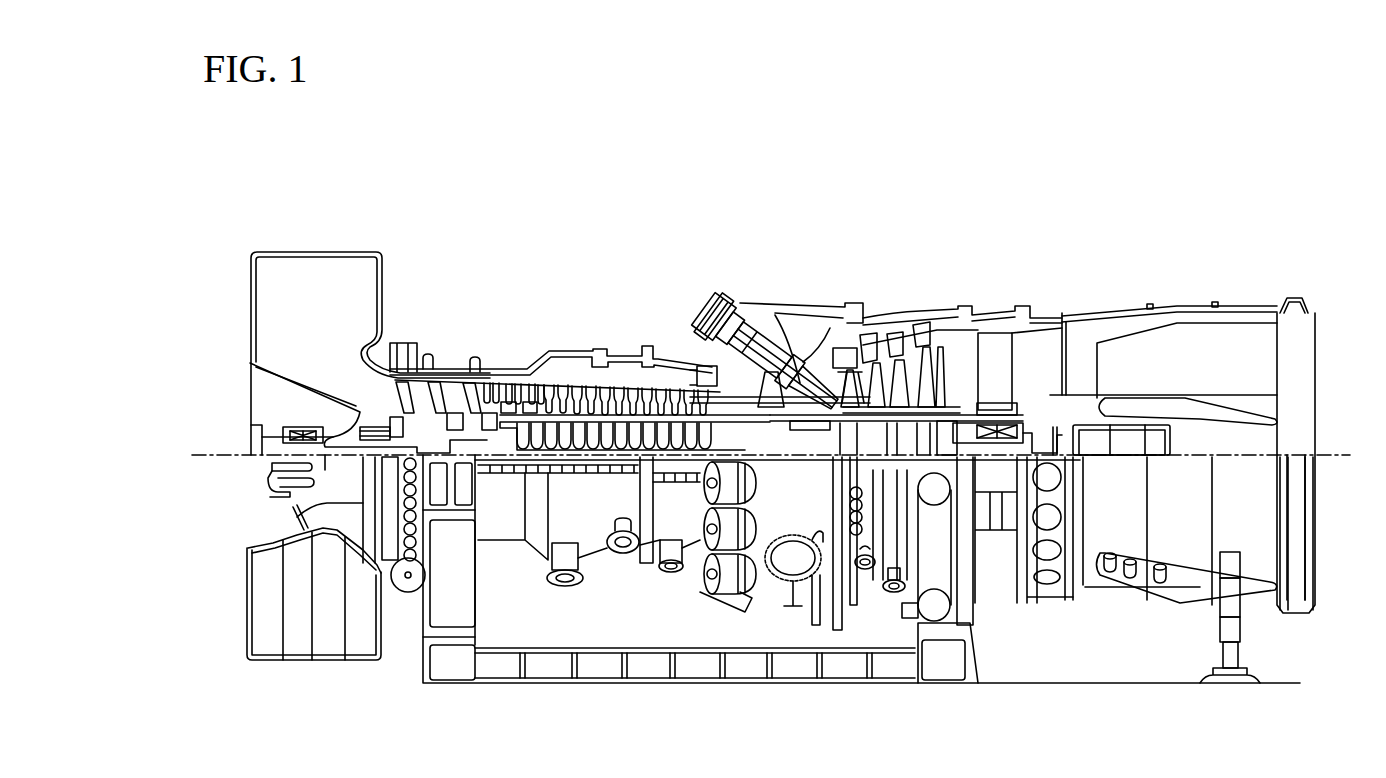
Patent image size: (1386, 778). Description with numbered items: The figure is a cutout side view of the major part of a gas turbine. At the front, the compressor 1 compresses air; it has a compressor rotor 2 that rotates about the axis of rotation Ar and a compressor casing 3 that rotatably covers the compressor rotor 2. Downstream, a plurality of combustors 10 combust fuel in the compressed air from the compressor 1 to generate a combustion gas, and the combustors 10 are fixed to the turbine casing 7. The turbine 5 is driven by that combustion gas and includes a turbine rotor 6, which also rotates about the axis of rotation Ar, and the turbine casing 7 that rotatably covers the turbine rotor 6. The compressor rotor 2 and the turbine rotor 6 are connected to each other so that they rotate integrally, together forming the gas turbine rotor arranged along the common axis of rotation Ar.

The compressor 1 is at (781, 467).
The compressor rotor 2 is at (471, 432).
The compressor casing 3 is at (577, 352).
The turbine 5 is at (947, 298).
The turbine rotor 6 is at (908, 445).
The turbine casing 7 is at (910, 325).
The combustor 10 is at (712, 287).
The axis of rotation Ar is at (1333, 456).